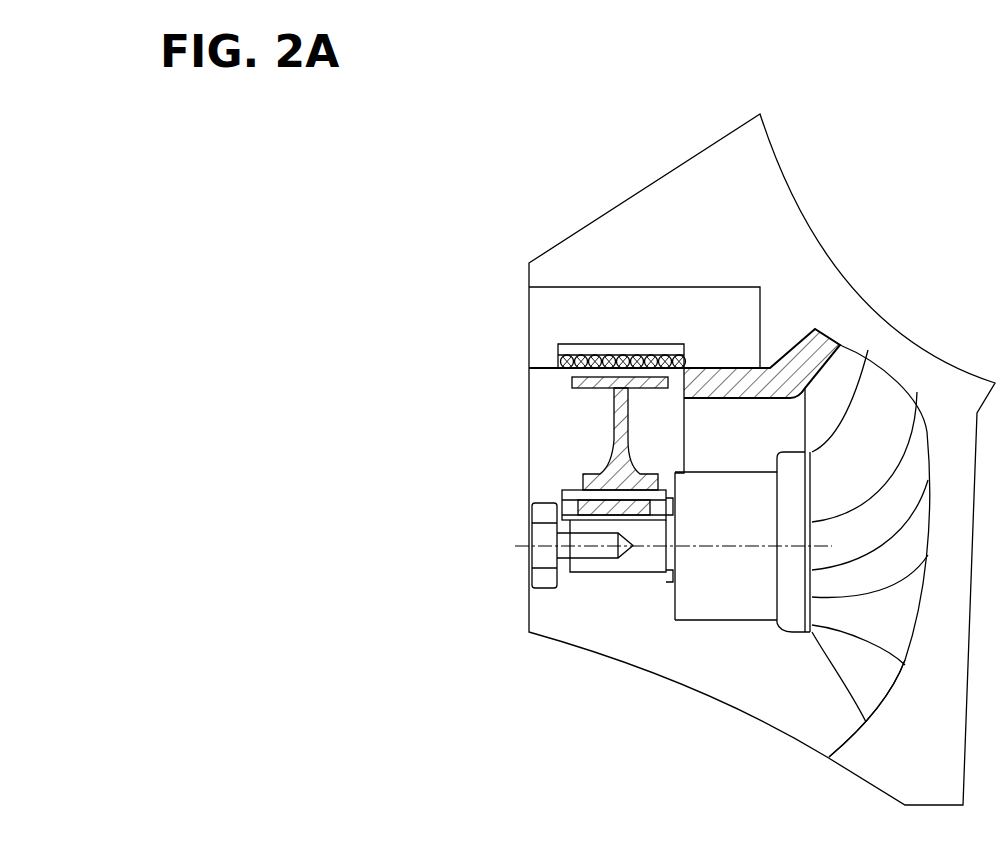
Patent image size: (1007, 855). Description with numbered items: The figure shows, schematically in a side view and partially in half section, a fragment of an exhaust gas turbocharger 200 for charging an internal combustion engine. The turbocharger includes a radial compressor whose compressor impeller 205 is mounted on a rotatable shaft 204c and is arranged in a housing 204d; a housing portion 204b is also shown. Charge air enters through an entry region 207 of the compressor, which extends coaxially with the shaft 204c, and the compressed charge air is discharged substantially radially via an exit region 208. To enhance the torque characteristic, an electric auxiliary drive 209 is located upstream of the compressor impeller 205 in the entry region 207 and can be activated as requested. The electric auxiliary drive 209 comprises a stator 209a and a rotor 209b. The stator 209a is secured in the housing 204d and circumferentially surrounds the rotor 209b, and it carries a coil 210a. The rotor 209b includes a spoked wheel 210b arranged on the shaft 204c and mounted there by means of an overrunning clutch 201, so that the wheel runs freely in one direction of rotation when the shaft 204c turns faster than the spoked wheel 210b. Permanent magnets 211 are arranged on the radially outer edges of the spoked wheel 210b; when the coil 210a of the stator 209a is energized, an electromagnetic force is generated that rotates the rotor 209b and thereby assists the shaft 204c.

The exhaust gas turbocharger 200 is at (442, 92).
The overrunning clutch 201 is at (558, 490).
The housing portion 204b is at (793, 655).
The rotatable shaft 204c is at (748, 529).
The housing 204d is at (706, 312).
The compressor impeller 205 is at (878, 466).
The entry region 207 is at (667, 460).
The exit region 208 is at (892, 702).
The electric auxiliary drive 209 is at (632, 324).
The stator 209a is at (559, 357).
The rotor 209b is at (606, 413).
The coil 210a is at (559, 357).
The spoked wheel 210b is at (606, 413).
The permanent magnets 211 is at (572, 380).